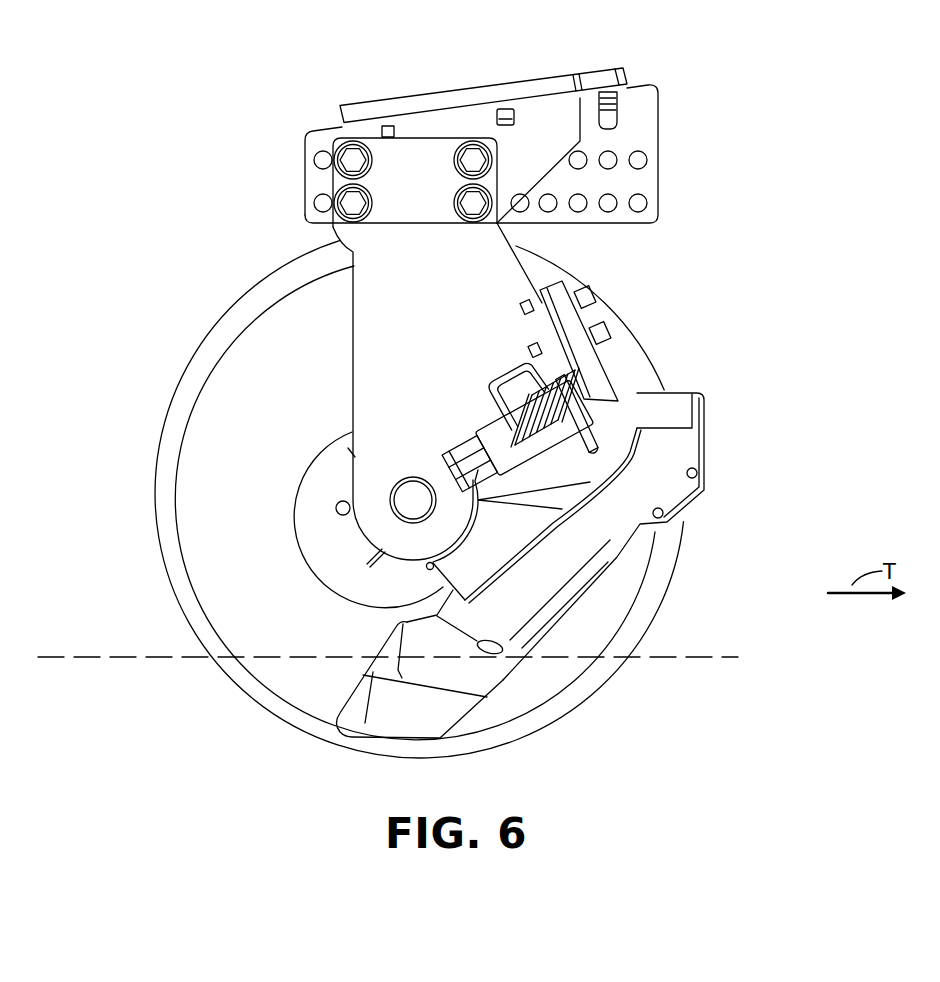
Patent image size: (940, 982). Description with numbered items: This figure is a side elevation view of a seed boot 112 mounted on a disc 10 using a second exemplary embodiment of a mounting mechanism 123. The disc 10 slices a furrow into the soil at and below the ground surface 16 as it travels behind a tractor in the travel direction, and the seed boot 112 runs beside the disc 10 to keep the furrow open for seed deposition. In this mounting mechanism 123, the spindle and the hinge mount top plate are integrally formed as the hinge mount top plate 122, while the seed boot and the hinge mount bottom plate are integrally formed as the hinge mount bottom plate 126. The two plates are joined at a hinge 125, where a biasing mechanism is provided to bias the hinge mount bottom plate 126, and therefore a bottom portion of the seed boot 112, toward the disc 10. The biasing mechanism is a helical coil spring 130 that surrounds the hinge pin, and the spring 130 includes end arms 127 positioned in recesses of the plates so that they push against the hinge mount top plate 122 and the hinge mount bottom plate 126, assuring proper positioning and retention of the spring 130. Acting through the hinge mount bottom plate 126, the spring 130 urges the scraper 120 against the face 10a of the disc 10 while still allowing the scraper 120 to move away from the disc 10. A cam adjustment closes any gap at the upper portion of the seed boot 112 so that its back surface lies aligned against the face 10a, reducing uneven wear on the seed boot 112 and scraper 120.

The disc 10 is at (252, 375).
The face of disc 10a is at (279, 551).
The ground surface 16 is at (702, 653).
The seed boot 112 is at (618, 535).
The scraper 120 is at (497, 652).
The hinge mount top plate 122 is at (471, 305).
The mounting mechanism 123 is at (755, 238).
The hinge 125 is at (596, 378).
The hinge mount bottom plate 126 is at (597, 483).
The end arms 127 is at (490, 397).
The spring 130 is at (538, 398).